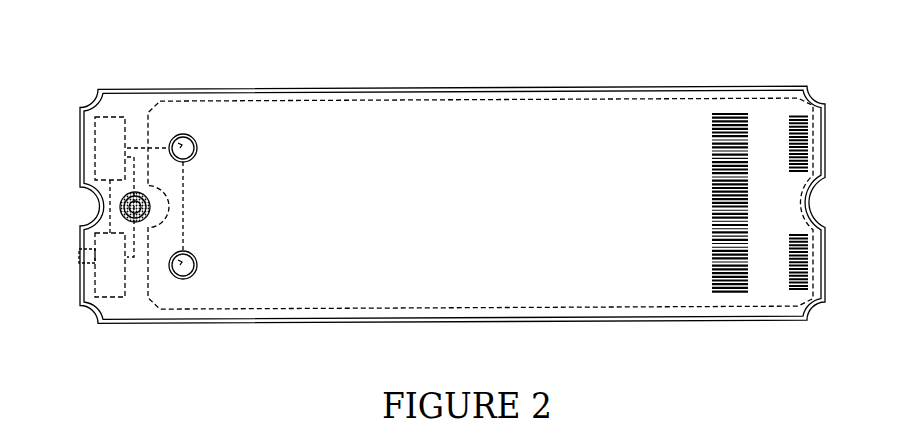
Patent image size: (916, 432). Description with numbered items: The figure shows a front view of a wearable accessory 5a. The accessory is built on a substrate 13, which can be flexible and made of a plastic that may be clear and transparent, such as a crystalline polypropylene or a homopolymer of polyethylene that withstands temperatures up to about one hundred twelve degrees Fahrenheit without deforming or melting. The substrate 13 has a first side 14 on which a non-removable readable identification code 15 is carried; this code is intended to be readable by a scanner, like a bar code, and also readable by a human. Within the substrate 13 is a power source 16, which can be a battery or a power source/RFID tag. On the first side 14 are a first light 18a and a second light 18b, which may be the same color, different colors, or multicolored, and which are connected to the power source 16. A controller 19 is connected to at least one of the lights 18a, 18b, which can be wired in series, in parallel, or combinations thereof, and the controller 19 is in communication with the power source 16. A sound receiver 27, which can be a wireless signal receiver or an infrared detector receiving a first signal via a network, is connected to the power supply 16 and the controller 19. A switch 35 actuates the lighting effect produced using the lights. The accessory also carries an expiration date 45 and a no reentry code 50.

The wearable accessory 5a is at (755, 343).
The substrate 13 is at (453, 88).
The first side 14 is at (420, 240).
The non-removable readable identification code 15 is at (662, 113).
The power source 16 is at (106, 279).
The first light 18a is at (198, 268).
The second light 18b is at (184, 145).
The controller 19 is at (106, 147).
The sound receiver 27 is at (121, 208).
The switch 35 is at (82, 257).
The expiration date 45 is at (789, 233).
The no reentry code 50 is at (789, 115).